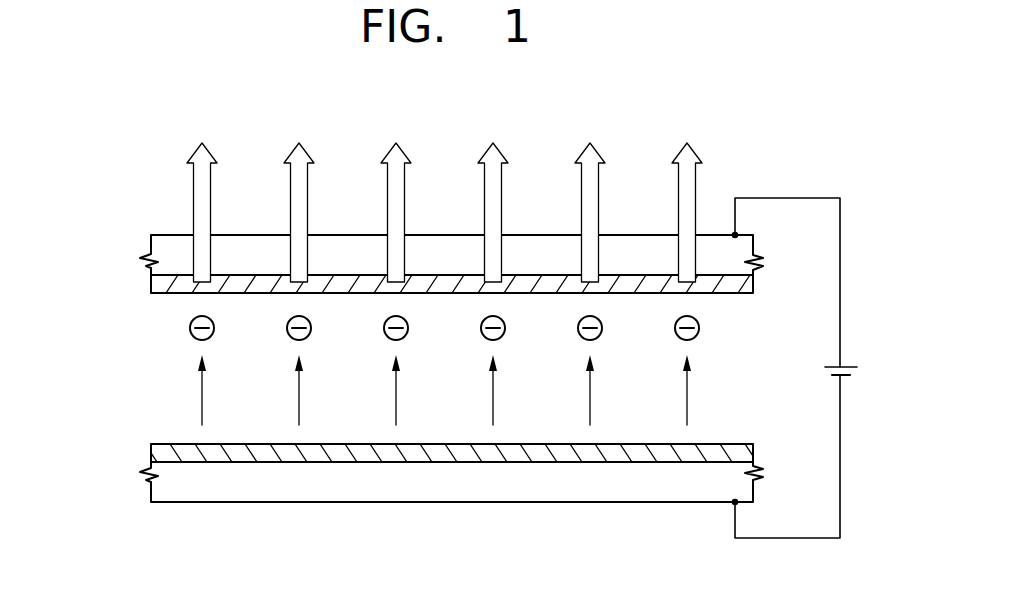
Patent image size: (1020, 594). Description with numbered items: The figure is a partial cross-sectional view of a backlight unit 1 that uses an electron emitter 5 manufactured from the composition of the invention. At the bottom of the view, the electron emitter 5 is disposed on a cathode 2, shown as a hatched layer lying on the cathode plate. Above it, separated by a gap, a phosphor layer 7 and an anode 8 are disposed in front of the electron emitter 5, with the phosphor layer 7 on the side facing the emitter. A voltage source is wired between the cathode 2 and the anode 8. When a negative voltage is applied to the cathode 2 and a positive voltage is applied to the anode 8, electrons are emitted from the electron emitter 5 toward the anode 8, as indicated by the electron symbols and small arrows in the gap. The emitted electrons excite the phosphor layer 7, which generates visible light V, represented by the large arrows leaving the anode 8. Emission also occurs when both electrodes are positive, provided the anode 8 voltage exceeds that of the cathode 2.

The backlight unit 1 is at (128, 156).
The cathode 2 is at (153, 492).
The electron emitter 5 is at (157, 453).
The phosphor layer 7 is at (160, 280).
The anode 8 is at (160, 245).
The visible light V is at (695, 177).